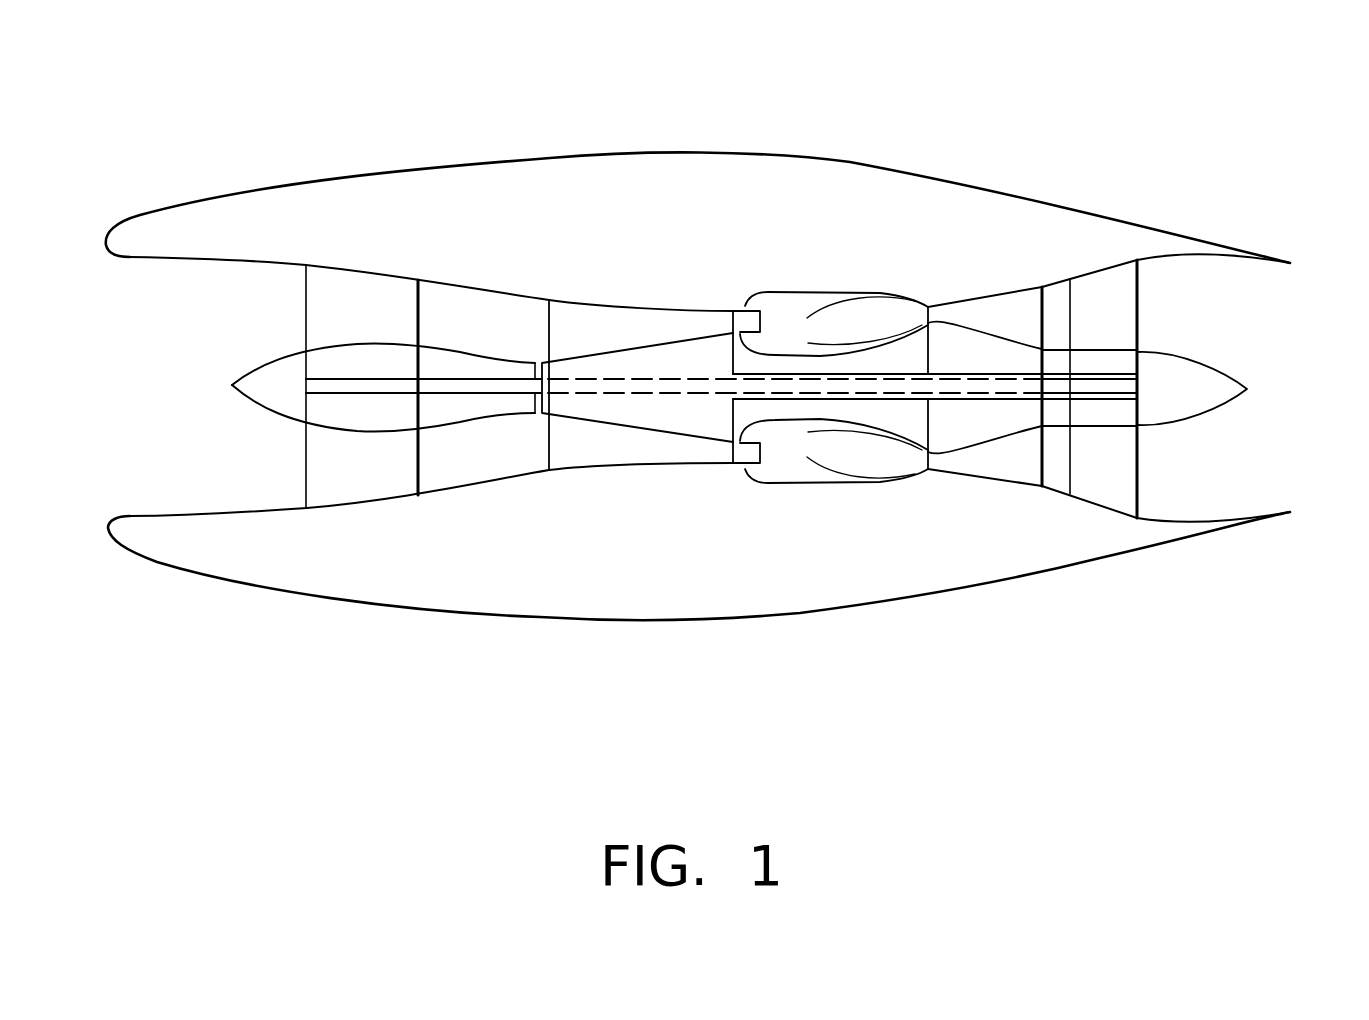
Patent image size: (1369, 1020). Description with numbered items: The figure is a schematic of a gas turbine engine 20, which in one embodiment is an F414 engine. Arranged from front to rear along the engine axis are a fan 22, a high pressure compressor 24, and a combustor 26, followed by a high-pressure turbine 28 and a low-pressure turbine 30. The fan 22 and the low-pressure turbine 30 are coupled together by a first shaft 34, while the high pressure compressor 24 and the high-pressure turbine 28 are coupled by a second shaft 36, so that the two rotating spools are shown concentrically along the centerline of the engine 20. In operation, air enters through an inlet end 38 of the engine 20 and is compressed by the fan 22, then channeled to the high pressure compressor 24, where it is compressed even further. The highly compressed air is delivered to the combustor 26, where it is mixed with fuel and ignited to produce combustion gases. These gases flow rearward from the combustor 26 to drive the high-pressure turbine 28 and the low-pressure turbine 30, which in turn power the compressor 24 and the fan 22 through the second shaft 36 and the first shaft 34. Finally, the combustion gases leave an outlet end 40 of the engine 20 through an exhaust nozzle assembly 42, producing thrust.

The gas turbine engine 20 is at (303, 97).
The fan 22 is at (352, 327).
The high pressure compressor 24 is at (607, 330).
The combustor 26 is at (872, 457).
The high-pressure turbine 28 is at (990, 312).
The low-pressure turbine 30 is at (1087, 297).
The first shaft 34 is at (495, 395).
The second shaft 36 is at (763, 402).
The inlet end 38 is at (124, 441).
The outlet end 40 is at (1332, 287).
The exhaust nozzle assembly 42 is at (1200, 523).